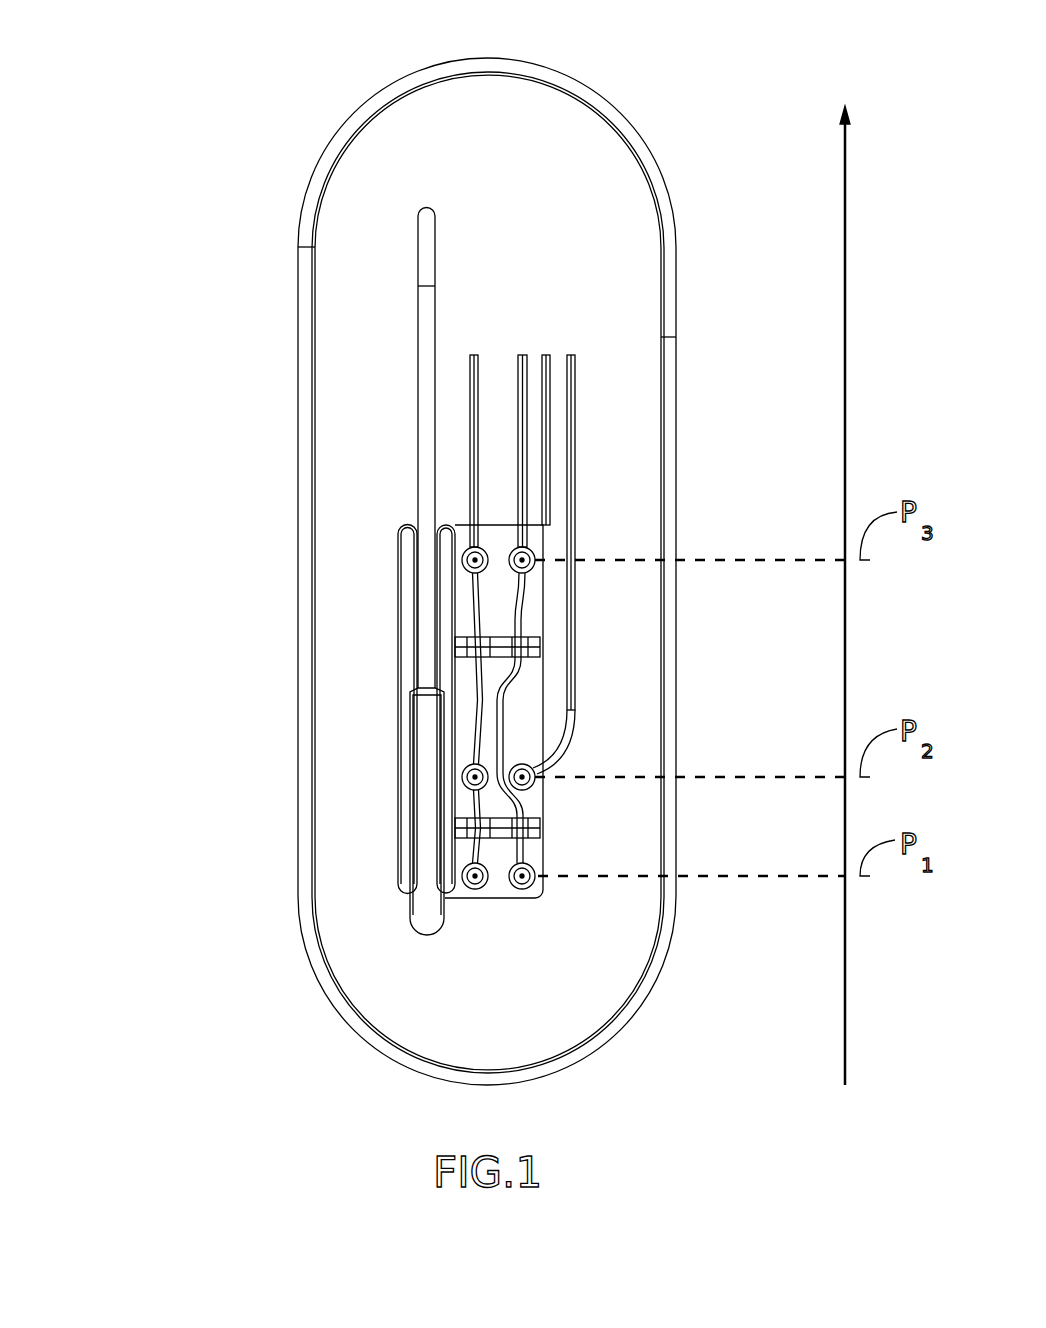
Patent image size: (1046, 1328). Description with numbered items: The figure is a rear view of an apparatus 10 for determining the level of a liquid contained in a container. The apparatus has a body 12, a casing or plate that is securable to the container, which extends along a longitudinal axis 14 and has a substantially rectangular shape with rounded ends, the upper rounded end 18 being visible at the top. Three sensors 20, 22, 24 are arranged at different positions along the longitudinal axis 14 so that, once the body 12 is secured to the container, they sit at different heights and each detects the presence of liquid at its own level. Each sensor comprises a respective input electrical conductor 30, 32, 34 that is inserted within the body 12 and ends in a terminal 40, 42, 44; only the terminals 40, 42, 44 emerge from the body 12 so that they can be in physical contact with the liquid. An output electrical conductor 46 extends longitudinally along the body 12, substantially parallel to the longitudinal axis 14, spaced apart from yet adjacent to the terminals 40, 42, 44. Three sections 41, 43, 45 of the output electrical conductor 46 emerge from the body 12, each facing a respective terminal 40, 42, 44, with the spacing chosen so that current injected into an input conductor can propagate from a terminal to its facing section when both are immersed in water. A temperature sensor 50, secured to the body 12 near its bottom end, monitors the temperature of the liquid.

The apparatus 10 is at (185, 65).
The rounded end 18 is at (343, 70).
The body 12 is at (347, 280).
The longitudinal axis 14 is at (845, 172).
The output electrical conductor 46 is at (478, 363).
The input electrical conductor 30 is at (547, 377).
The input electrical conductor 34 is at (527, 447).
The input electrical conductor 32 is at (575, 475).
The sensor 24 is at (537, 559).
The sensor 22 is at (540, 772).
The sensor 20 is at (545, 870).
The terminal 44 is at (528, 566).
The terminal 42 is at (530, 785).
The terminal 40 is at (527, 885).
The section of the electrical conductor 45 is at (462, 560).
The section of the electrical conductor 43 is at (462, 776).
The section of the electrical conductor 41 is at (474, 889).
The temperature sensor 50 is at (435, 787).